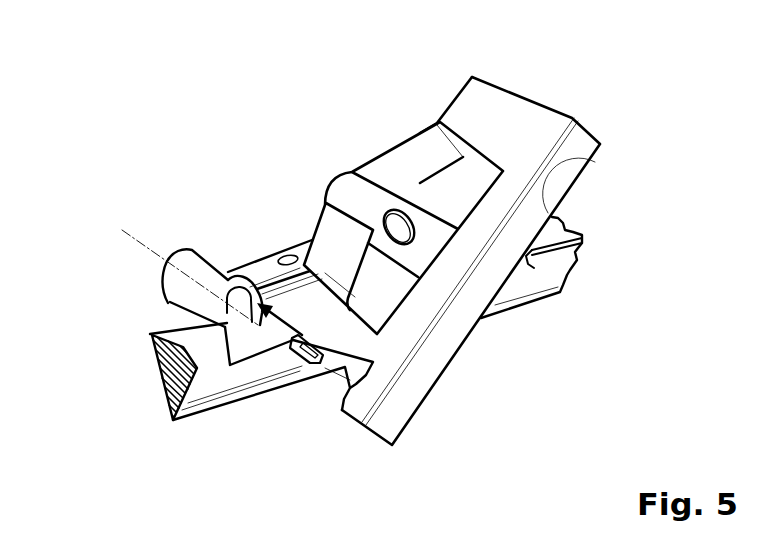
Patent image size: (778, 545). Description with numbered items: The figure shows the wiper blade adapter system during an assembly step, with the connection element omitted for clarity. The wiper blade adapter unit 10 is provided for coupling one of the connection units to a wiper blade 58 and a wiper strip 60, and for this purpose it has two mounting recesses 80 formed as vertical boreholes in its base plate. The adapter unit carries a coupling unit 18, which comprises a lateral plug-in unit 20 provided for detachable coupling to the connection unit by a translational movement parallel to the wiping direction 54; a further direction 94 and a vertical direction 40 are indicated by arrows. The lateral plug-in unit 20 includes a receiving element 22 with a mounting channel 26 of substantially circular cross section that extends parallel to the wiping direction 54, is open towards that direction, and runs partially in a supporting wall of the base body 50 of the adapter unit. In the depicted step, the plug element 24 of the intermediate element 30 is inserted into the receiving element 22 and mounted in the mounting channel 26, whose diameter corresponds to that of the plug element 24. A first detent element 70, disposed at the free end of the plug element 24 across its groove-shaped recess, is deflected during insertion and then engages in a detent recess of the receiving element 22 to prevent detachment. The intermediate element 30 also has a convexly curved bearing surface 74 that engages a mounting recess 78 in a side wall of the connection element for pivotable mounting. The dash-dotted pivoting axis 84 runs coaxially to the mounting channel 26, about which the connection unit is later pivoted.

The wiper blade adapter unit 10 is at (652, 209).
The coupling unit 18 is at (228, 195).
The lateral plug-in unit 20 is at (128, 282).
The receiving element 22 is at (200, 258).
The plug element 24 is at (330, 378).
The mounting channel 26 is at (243, 298).
The intermediate element 30 is at (527, 120).
The vertical direction 40 is at (655, 70).
The base body 50 is at (277, 273).
The wiping direction 54 is at (92, 399).
The wiper blade 58 is at (537, 277).
The wiper strip 60 is at (153, 360).
The first detent element 70 is at (293, 343).
The bearing surface 74 is at (350, 185).
The mounting recess 78 is at (401, 227).
The mounting recesses 80 is at (291, 256).
The pivoting axis 84 is at (122, 230).
The longitudinal direction 94 is at (213, 456).